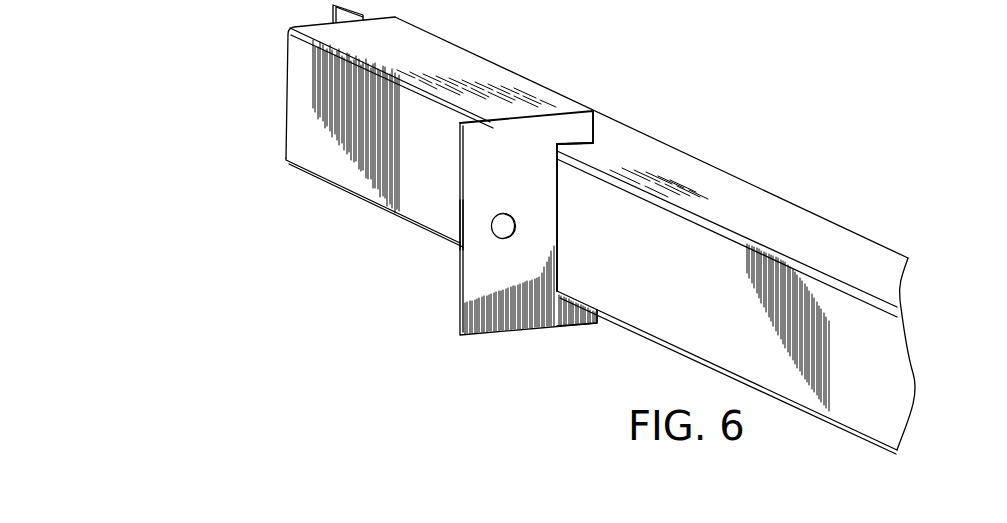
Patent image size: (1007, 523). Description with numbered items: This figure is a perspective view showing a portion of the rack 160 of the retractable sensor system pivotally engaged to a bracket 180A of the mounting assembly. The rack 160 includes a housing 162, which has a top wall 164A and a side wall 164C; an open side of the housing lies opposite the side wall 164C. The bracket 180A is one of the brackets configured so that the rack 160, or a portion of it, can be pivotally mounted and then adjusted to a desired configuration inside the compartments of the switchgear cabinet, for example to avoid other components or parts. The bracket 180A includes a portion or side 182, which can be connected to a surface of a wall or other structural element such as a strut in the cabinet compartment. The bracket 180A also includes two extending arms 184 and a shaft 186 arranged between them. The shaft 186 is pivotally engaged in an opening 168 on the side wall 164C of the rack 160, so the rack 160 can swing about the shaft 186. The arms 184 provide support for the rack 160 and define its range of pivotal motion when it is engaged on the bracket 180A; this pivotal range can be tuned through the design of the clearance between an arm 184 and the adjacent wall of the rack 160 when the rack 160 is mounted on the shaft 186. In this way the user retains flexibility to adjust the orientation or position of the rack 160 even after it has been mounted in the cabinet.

The rack 160 is at (818, 198).
The housing 162 is at (870, 262).
The top wall 164A is at (677, 167).
The side wall 164C is at (318, 115).
The opening 168 is at (572, 198).
The bracket 180A is at (447, 280).
The side 182 is at (463, 227).
The extending arm 184 is at (572, 124).
The shaft 186 is at (557, 217).